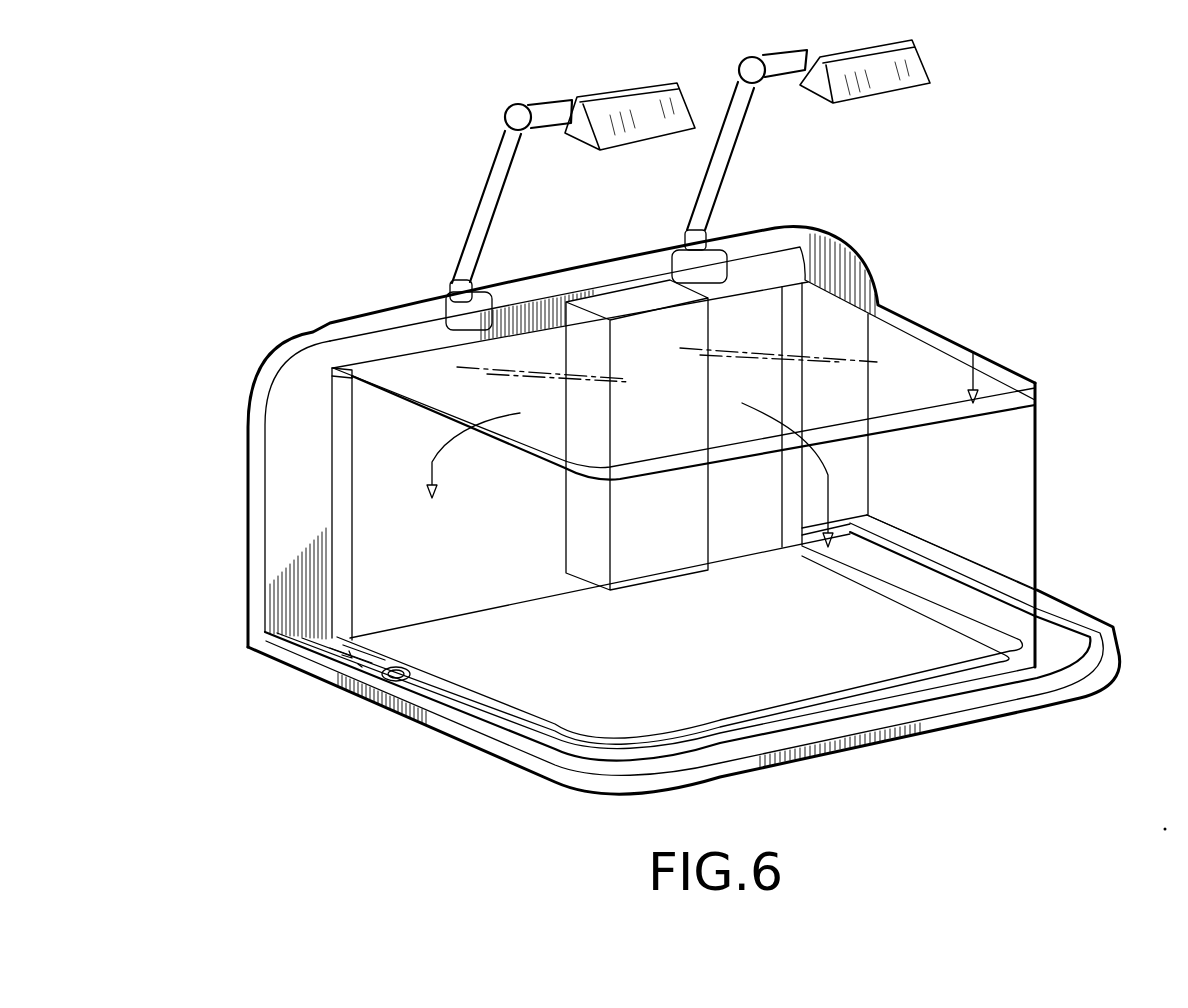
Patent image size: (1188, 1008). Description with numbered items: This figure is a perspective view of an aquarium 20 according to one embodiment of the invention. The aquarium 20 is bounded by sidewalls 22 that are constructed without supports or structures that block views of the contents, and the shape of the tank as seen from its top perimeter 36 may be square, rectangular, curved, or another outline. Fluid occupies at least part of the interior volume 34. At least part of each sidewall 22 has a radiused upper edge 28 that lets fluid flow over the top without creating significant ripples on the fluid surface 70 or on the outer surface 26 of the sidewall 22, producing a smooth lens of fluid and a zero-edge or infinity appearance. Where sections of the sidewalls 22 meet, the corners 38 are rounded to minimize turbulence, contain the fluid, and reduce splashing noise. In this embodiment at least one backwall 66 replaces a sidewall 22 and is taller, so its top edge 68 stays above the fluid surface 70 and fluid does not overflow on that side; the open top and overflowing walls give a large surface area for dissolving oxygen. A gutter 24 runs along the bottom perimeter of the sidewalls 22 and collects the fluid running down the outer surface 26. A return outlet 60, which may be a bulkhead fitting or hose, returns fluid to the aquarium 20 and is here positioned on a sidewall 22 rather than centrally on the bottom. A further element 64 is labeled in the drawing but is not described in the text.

The aquarium 20 is at (995, 262).
The sidewall 22 is at (993, 365).
The gutter 24 is at (617, 790).
The outer surface 26 is at (1037, 507).
The radiused upper edge 28 is at (1037, 390).
The interior volume 34 is at (701, 389).
The top perimeter 36 is at (367, 383).
The corner 38 is at (333, 366).
The return outlet 60 is at (656, 590).
The drain 64 is at (378, 678).
The backwall 66 is at (378, 312).
The top edge 68 is at (560, 275).
The fluid surface 70 is at (753, 312).